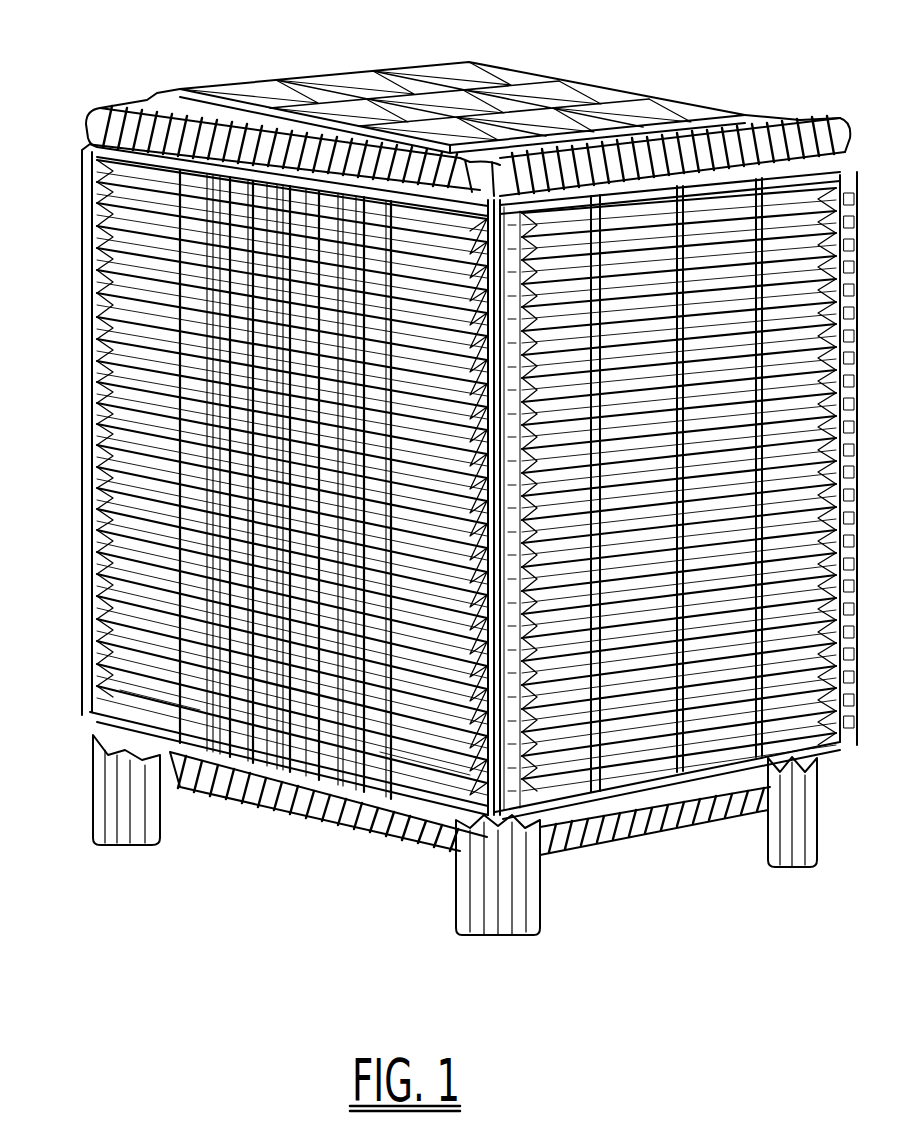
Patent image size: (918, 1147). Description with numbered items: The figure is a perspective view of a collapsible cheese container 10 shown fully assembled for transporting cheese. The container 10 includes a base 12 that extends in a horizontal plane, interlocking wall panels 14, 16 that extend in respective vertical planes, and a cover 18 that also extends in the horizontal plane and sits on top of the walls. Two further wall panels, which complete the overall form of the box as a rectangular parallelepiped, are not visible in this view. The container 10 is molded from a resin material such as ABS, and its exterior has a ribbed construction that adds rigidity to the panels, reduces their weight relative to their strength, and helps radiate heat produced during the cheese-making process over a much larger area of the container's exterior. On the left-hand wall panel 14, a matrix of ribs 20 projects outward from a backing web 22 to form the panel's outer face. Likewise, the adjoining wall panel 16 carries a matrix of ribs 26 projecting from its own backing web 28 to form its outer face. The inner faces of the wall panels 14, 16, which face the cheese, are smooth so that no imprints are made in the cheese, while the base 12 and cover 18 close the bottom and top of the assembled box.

The collapsible cheese container 10 is at (100, 47).
The base 12 is at (240, 790).
The wall panel 14 is at (128, 305).
The wall panel 16 is at (645, 718).
The cover 18 is at (503, 72).
The ribs 20 is at (122, 692).
The backing web 22 is at (92, 716).
The ribs 26 is at (608, 765).
The backing web 28 is at (797, 198).